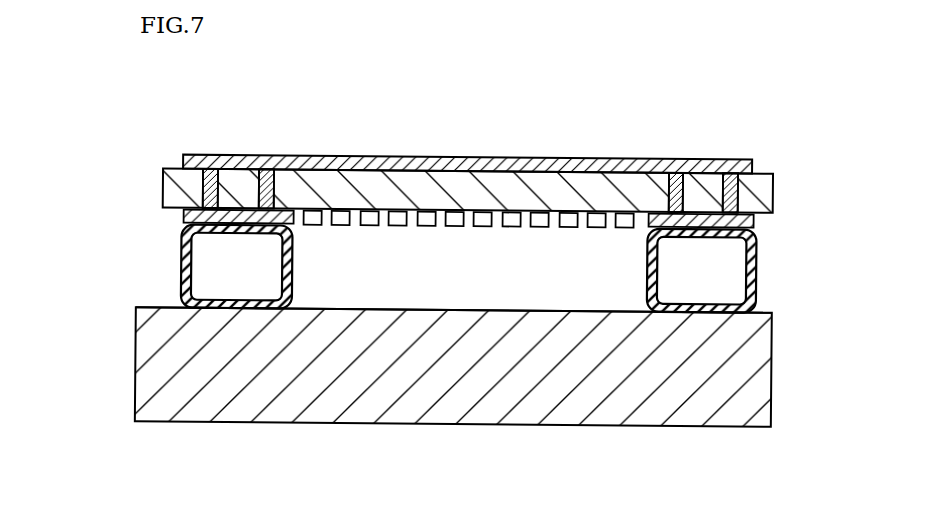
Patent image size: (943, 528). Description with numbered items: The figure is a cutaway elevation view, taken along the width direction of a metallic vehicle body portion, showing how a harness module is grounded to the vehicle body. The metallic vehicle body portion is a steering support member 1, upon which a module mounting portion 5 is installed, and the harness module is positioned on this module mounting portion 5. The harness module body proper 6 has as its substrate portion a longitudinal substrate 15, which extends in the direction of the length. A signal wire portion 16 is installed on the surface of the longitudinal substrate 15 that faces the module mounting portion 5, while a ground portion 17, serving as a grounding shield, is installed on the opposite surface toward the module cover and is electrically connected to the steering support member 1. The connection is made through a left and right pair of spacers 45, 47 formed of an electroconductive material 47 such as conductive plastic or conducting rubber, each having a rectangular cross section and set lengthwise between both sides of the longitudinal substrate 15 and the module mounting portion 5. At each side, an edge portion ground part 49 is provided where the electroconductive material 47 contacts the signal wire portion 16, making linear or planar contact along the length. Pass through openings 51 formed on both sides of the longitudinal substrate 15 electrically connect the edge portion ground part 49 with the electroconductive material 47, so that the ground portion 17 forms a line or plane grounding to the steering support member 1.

The steering support member 1 is at (776, 407).
The module mounting portion 5 is at (772, 309).
The harness module body proper 6 is at (493, 184).
The longitudinal substrate 15 is at (772, 194).
The signal wire portion 16 is at (305, 233).
The ground portion 17 is at (748, 155).
The tubular support member 45 is at (404, 267).
The electroconductive material 47 is at (181, 268).
The edge portion ground part 49 is at (183, 223).
The pass through opening 51 is at (730, 179).